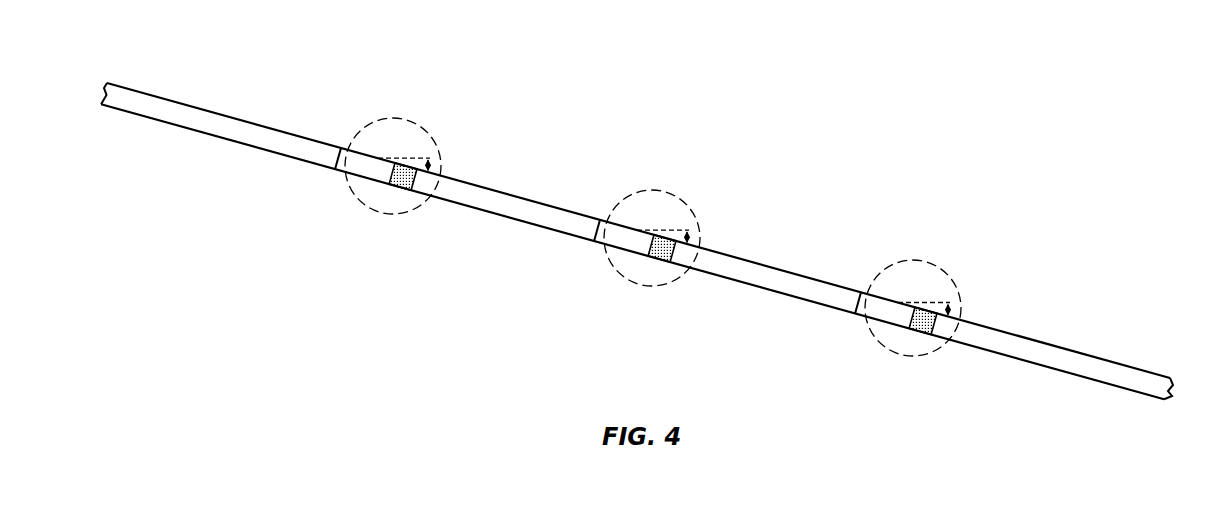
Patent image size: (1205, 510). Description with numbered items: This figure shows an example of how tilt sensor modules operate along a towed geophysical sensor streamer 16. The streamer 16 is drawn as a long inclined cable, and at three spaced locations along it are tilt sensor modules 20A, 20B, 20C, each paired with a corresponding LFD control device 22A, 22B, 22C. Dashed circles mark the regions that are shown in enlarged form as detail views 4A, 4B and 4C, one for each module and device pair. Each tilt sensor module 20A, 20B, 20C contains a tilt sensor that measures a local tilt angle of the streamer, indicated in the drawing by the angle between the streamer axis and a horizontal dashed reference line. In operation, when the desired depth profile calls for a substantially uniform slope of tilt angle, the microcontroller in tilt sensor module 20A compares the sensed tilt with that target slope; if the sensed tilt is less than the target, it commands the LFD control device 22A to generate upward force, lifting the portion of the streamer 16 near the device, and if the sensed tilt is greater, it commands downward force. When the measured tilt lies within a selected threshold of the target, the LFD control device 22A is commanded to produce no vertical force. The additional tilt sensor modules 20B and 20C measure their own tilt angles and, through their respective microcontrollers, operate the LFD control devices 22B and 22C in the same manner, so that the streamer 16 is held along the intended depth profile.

The streamer 16 is at (1037, 341).
The enlarged view of first tilt sensor module 4A is at (434, 141).
The enlarged view of second tilt sensor module 4B is at (693, 213).
The enlarged view of third tilt sensor module 4C is at (954, 283).
The tilt sensor module 20A is at (350, 176).
The tilt sensor module 20B is at (620, 249).
The tilt sensor module 20C is at (881, 320).
The LFD control device 22A is at (400, 192).
The LFD control device 22B is at (659, 262).
The LFD control device 22C is at (920, 332).